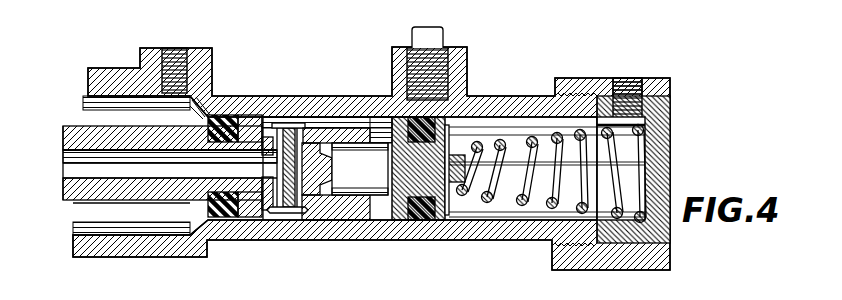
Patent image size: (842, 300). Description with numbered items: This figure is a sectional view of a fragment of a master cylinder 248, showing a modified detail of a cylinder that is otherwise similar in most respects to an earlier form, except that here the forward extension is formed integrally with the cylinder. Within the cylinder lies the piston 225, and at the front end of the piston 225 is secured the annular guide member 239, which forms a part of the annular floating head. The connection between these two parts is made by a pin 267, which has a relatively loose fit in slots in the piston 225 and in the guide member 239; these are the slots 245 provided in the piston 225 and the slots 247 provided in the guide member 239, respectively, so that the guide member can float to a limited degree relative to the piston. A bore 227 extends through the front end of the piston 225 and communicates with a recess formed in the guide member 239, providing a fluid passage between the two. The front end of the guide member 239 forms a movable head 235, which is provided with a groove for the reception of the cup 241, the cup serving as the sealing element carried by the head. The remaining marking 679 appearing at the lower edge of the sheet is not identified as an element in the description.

The housing body 225 is at (262, 126).
The piston rod 227 is at (90, 165).
The piston 235 is at (452, 212).
The plug with bolt 239 is at (325, 135).
The piston seals 241 is at (415, 220).
The rod seals 245 is at (240, 216).
The retaining rings 247 is at (283, 128).
The lower housing portion 248 is at (155, 242).
The valve stem 267 is at (293, 188).
The valve plug 679 is at (326, 221).